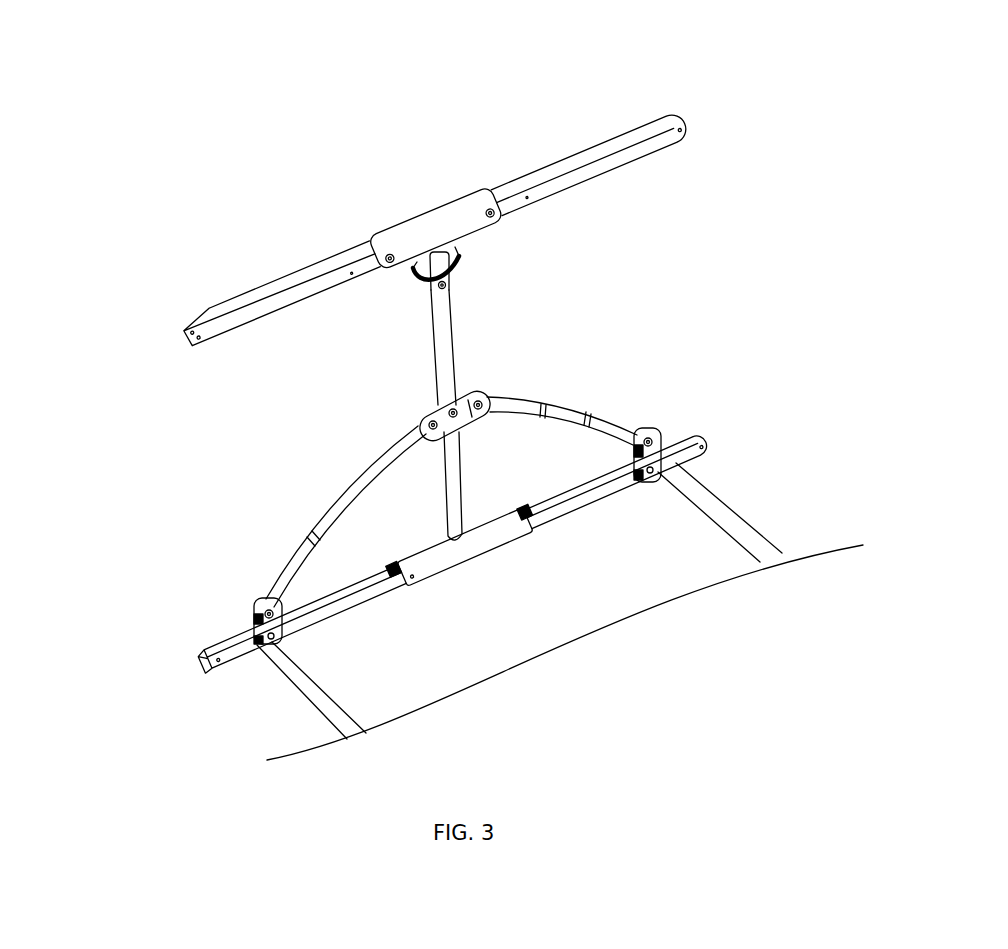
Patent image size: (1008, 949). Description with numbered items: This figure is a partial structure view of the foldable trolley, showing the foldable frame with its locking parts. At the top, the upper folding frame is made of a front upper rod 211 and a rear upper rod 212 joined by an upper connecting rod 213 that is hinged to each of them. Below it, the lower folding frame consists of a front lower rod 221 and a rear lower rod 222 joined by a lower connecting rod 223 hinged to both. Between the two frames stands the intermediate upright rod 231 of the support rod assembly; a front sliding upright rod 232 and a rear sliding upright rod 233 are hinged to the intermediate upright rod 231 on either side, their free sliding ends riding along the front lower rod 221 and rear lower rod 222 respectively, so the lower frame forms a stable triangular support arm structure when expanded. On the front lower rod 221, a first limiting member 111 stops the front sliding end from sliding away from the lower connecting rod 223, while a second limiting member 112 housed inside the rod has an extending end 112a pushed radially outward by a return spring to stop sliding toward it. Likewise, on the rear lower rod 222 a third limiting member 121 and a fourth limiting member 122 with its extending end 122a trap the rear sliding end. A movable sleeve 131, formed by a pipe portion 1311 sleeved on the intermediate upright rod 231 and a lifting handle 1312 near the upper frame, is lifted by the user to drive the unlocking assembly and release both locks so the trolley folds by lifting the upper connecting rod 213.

The first limiting member 111 is at (713, 505).
The second limiting member 112 is at (746, 298).
The extending end 112a is at (657, 442).
The third limiting member 121 is at (282, 677).
The fourth limiting member 122 is at (118, 543).
The extending end 122a is at (255, 610).
The movable sleeve 131 is at (392, 115).
The pipe portion 1311 is at (430, 253).
The lifting handle 1312 is at (437, 280).
The front upper rod 211 is at (595, 155).
The rear upper rod 212 is at (270, 295).
The upper connecting rod 213 is at (468, 203).
The front lower rod 221 is at (700, 430).
The rear lower rod 222 is at (212, 648).
The lower connecting rod 223 is at (478, 558).
The intermediate upright rod 231 is at (442, 352).
The front sliding upright rod 232 is at (433, 424).
The rear sliding upright rod 233 is at (313, 527).